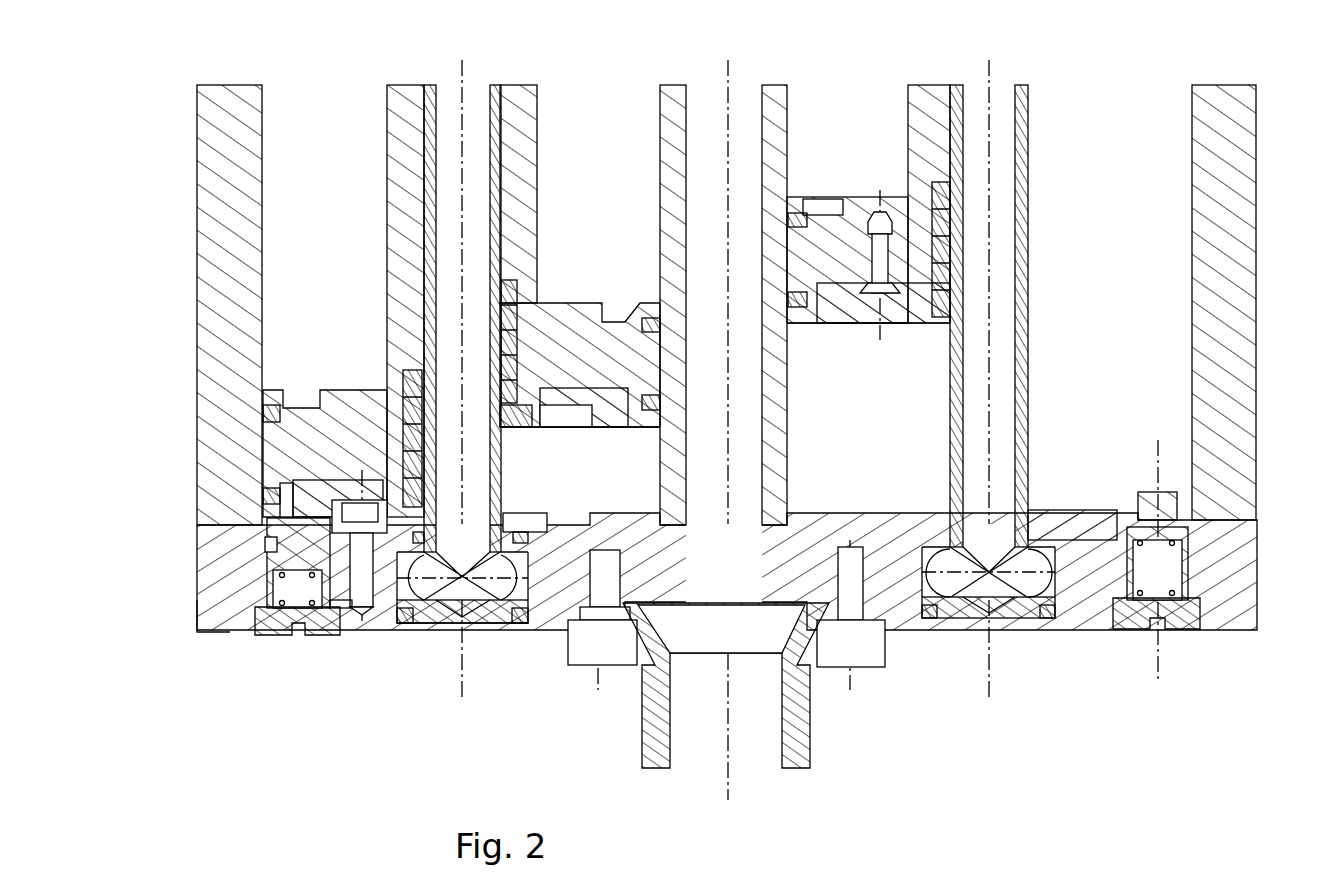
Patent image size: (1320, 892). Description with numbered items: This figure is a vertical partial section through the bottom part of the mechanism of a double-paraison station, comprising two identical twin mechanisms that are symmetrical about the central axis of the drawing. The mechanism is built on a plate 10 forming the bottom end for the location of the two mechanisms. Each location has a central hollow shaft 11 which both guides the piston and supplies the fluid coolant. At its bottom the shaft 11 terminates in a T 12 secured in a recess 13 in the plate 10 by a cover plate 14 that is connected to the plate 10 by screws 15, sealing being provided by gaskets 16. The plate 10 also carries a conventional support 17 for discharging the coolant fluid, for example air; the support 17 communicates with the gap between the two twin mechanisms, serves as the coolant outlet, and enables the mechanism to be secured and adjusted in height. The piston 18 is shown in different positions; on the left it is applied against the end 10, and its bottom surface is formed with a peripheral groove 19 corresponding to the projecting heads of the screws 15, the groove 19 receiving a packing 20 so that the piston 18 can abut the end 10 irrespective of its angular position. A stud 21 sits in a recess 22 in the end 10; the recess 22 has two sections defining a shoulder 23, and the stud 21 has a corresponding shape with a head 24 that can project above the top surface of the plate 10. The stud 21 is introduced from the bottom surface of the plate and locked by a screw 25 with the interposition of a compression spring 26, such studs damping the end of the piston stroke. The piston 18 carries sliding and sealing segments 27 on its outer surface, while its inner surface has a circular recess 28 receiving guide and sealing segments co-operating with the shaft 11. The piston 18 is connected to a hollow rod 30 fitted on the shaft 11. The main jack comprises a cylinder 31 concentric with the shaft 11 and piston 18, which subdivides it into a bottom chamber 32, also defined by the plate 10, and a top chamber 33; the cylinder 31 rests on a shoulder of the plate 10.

The plate 10 is at (1228, 565).
The central hollow shaft 11 is at (429, 100).
The T 12 is at (448, 622).
The recess 13 is at (405, 624).
The cover plate 14 is at (573, 627).
The screws 15 is at (332, 610).
The gaskets 16 is at (525, 624).
The support 17 is at (740, 753).
The piston 18 is at (380, 400).
The peripheral groove 19 is at (330, 440).
The packing 20 is at (905, 290).
The stud 21 is at (199, 633).
The recess 22 is at (268, 560).
The shoulder 23 is at (264, 528).
The head 24 is at (262, 497).
The screw 25 is at (280, 636).
The compression spring 26 is at (1200, 603).
The sliding and sealing segments 27 is at (268, 410).
The circular recess 28 is at (408, 330).
The hollow rod 30 is at (518, 100).
The cylinder 31 is at (240, 100).
The bottom chamber 32 is at (800, 440).
The top chamber 33 is at (575, 140).